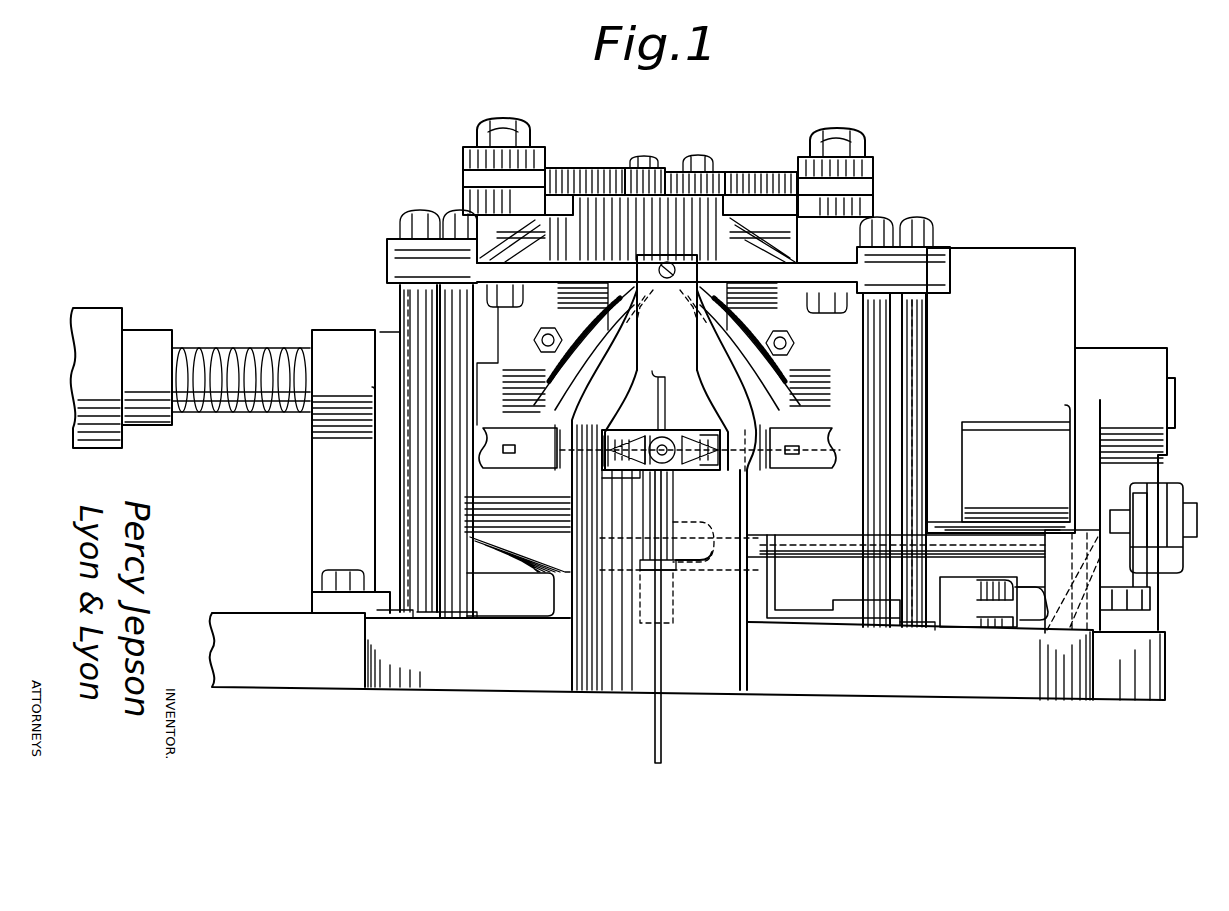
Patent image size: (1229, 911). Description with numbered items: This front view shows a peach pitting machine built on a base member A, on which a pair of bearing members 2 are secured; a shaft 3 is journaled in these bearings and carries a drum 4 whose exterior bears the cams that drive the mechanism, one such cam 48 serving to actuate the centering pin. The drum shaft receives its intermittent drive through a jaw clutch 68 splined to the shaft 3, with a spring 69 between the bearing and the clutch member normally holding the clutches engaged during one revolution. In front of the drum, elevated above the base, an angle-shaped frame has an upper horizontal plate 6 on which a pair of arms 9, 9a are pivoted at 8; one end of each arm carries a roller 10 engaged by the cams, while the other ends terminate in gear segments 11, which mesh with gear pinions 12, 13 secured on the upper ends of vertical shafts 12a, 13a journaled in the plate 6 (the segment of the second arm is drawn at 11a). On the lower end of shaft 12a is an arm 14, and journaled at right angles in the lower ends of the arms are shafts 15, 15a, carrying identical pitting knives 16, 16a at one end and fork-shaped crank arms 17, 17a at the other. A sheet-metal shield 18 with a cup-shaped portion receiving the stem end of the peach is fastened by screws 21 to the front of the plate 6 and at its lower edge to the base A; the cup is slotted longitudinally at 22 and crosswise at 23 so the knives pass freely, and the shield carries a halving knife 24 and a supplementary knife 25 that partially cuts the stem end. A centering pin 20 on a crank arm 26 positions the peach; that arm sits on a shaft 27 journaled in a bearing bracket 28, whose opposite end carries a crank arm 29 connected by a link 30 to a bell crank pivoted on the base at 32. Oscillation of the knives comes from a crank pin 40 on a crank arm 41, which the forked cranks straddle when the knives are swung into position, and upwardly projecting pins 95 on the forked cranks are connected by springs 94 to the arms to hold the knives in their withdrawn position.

The base member A is at (524, 684).
The bearing members 2 is at (322, 487).
The shaft 3 is at (248, 405).
The drum 4 is at (1068, 272).
The upper horizontal plate 6 is at (582, 268).
The pivots 8 is at (490, 138).
The arm 9 is at (870, 186).
The arm 9a is at (466, 177).
The roller 10 is at (560, 208).
The gear segments 11 is at (760, 172).
The die block 11a is at (598, 168).
The gear pinion 12 is at (722, 172).
The shaft 12a is at (698, 157).
The gear pinion 13 is at (656, 170).
The shaft 13a is at (650, 158).
The arm 14 is at (785, 365).
The shaft 15 is at (790, 436).
The shaft 15a is at (518, 452).
The pitting knife 16 is at (698, 470).
The pitting knife 16a is at (634, 434).
The fork-shaped crank arm 17 is at (808, 458).
The fork-shaped crank arm 17a is at (505, 470).
The shield 18 is at (664, 490).
The centering pin 20 is at (668, 436).
The screws 21 is at (666, 262).
The longitudinal slot 22 is at (680, 564).
The crosswise slot 23 is at (710, 436).
The splitting or halving knife 24 is at (662, 714).
The supplementary knife 25 is at (664, 390).
The crank arm 26 is at (670, 502).
The shaft 27 is at (797, 560).
The bearing bracket 28 is at (760, 595).
The crank arm 29 is at (1150, 580).
The link 30 is at (1170, 498).
The pivot 32 is at (994, 602).
The crank pin 40 is at (613, 430).
The crank arm 41 is at (621, 485).
The cam 48 is at (1012, 436).
The jaw clutch 68 is at (117, 323).
The spring 69 is at (222, 352).
The springs 94 is at (615, 325).
The rods or pins 95 is at (548, 392).